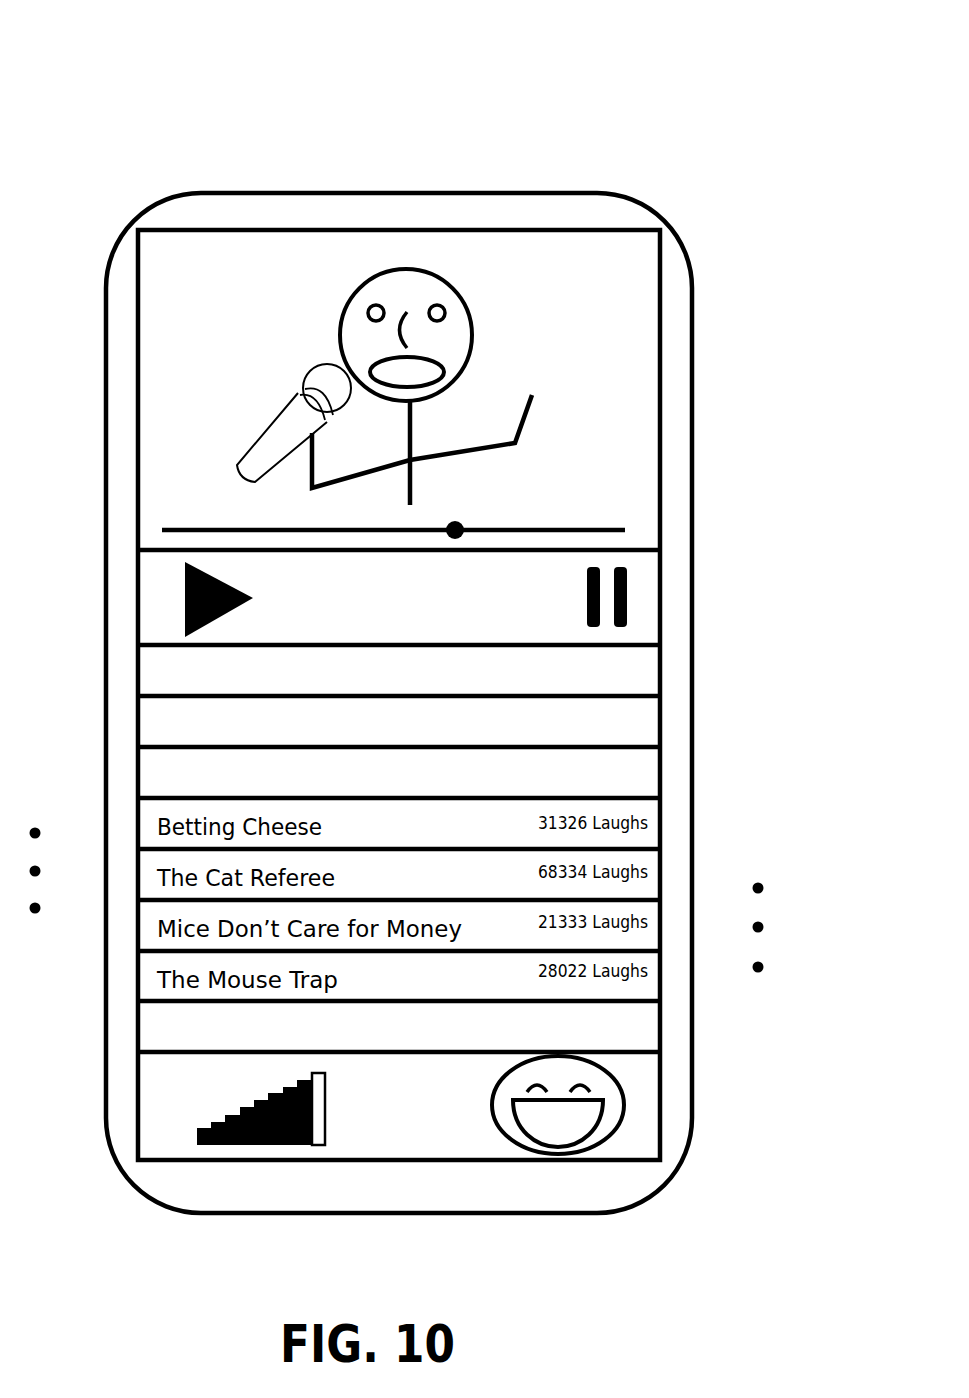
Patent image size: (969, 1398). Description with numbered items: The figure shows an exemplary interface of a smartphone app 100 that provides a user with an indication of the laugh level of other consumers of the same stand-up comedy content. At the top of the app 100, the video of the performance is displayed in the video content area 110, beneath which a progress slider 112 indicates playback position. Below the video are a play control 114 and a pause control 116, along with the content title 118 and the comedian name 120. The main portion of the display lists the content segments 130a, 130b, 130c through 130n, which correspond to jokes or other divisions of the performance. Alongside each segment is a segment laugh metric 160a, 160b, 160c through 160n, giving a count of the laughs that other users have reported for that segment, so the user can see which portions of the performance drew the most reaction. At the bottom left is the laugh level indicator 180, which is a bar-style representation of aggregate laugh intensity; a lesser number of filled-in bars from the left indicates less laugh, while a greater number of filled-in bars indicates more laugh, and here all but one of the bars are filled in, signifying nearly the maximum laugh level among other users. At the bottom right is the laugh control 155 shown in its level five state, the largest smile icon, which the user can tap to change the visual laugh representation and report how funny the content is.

The app display 100 is at (64, 105).
The video content 110 is at (638, 501).
The progress slider 112 is at (188, 528).
The play control 114 is at (185, 611).
The pause control 116 is at (627, 612).
The content title 118 is at (532, 588).
The comedian name 120 is at (473, 620).
The content segment 130a is at (153, 683).
The content segment 130b is at (153, 731).
The content segment 130c is at (151, 782).
The content segment 130n is at (153, 1037).
The segment laugh metric 160a is at (648, 674).
The segment laugh metric 160b is at (648, 724).
The segment laugh metric 160c is at (648, 774).
The segment laugh metric 160n is at (638, 1023).
The indicator of laugh level for other consumers 180 is at (220, 1118).
The laugh control at level 5 155 is at (618, 1125).